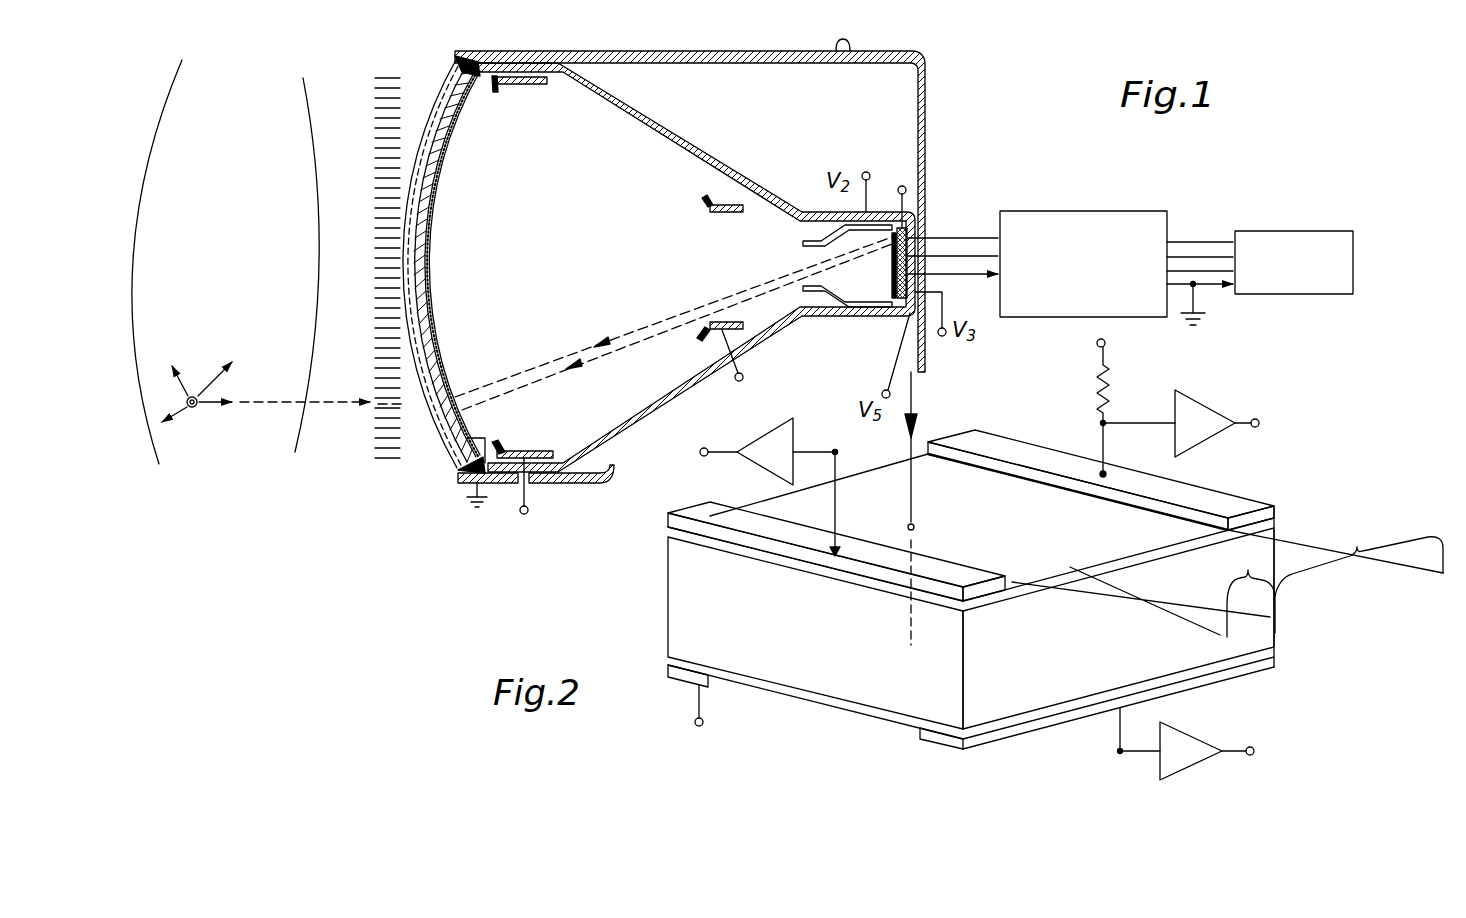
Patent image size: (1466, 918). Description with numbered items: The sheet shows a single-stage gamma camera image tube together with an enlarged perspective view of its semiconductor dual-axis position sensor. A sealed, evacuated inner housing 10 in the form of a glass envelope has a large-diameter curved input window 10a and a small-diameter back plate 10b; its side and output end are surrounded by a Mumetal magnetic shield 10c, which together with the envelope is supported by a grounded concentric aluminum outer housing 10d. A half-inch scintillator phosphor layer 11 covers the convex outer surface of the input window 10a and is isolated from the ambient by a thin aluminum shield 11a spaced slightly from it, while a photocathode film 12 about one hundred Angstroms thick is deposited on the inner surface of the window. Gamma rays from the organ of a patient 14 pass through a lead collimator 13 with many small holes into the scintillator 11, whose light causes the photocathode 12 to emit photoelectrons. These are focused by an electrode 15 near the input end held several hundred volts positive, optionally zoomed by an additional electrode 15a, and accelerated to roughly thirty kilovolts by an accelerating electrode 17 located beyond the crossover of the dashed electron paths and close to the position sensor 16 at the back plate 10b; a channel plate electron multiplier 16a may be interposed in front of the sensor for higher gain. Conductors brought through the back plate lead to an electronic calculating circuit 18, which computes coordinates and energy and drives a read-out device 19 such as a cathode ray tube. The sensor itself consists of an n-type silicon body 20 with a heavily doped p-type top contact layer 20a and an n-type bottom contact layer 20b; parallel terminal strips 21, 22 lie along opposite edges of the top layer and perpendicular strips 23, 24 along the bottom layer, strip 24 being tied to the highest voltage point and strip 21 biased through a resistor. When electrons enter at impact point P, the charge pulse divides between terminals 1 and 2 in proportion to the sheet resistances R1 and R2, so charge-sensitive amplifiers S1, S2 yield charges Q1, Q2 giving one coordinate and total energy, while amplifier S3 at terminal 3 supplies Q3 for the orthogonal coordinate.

In FIG. 1, the inner housing 10 is at (693, 295).
In FIG. 1, the input window 10a is at (450, 72).
In FIG. 1, the back plate 10b is at (925, 226).
In FIG. 1, the magnetic shield 10c is at (800, 63).
In FIG. 1, the outer housing 10d is at (843, 65).
In FIG. 1, the phosphor layer 11 is at (411, 306).
In FIG. 1, the aluminum shield 11a is at (437, 432).
In FIG. 1, the photocathode film 12 is at (451, 148).
In FIG. 1, the gamma radiation collimator 13 is at (390, 461).
In FIG. 1, the patient 14 is at (136, 316).
In FIG. 1, the electrode 15 is at (535, 88).
In FIG. 1, the additional electrode 15a is at (718, 216).
In FIG. 1, the semiconductor dual-axis position sensor 16 is at (913, 252).
In FIG. 1, the channel plate electron multiplier 16a is at (886, 283).
In FIG. 1, the accelerating electrode 17 is at (857, 303).
In FIG. 1, the electronic calculating circuit 18 is at (1120, 211).
In FIG. 1, the read-out device 19 is at (1297, 231).
In FIG. 2, the body 20 is at (971, 619).
In FIG. 2, the contact layer 20a is at (664, 540).
In FIG. 2, the contact layer 20b is at (667, 658).
In FIG. 2, the terminal strip 21 is at (1254, 495).
In FIG. 2, the terminal strip 22 is at (668, 516).
In FIG. 2, the terminal strip 23 is at (945, 742).
In FIG. 2, the terminal strip 24 is at (668, 672).
In FIG. 2, the terminal 1 is at (1126, 406).
In FIG. 2, the terminal 2 is at (826, 500).
In FIG. 2, the terminal 3 is at (1124, 743).
In FIG. 2, the electron impact point P is at (916, 524).
In FIG. 2, the effective sheet resistance R1 is at (1335, 558).
In FIG. 2, the effective sheet resistance R2 is at (1251, 591).
In FIG. 2, the charge-sensitive amplifier S1 is at (1205, 423).
In FIG. 2, the charge-sensitive amplifier S2 is at (765, 451).
In FIG. 2, the charge-sensitive amplifier S3 is at (1191, 751).
In FIG. 2, the charge Q1 is at (1251, 409).
In FIG. 2, the charge Q2 is at (713, 440).
In FIG. 2, the charge Q3 is at (1246, 738).